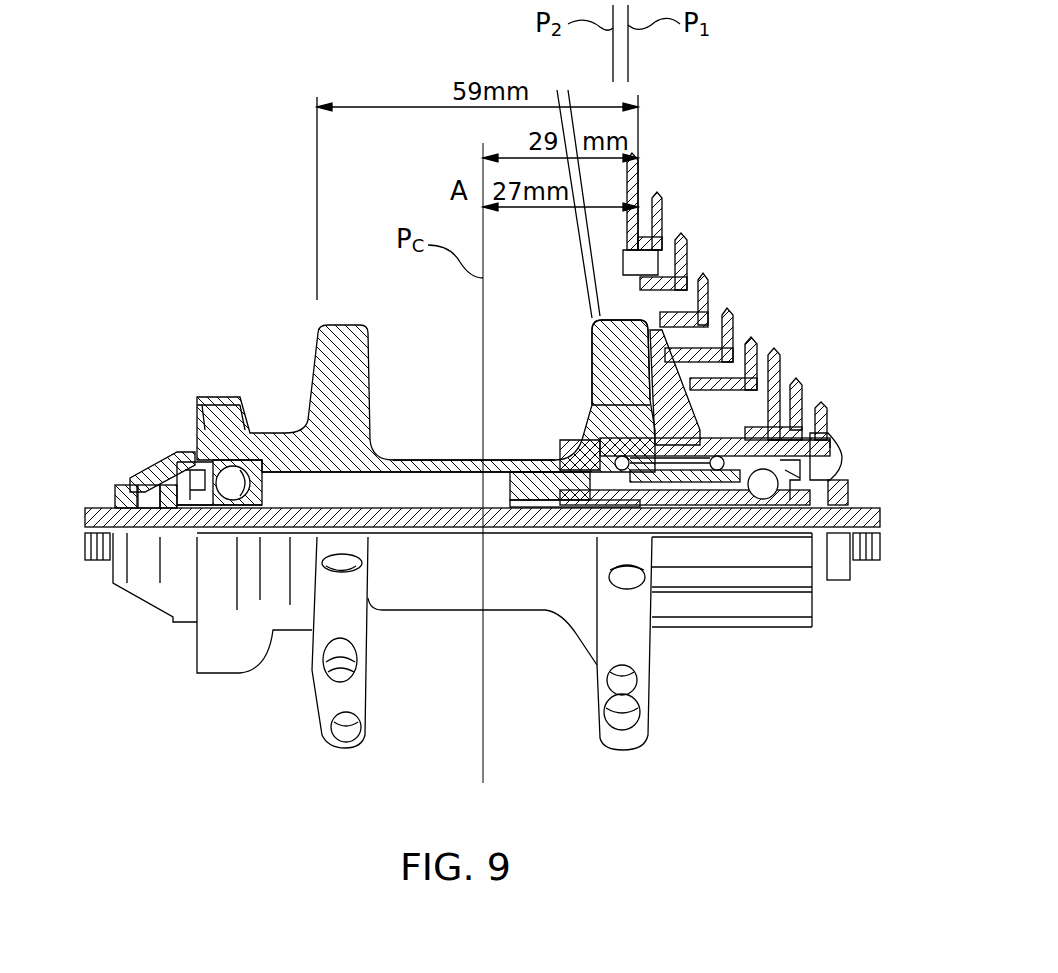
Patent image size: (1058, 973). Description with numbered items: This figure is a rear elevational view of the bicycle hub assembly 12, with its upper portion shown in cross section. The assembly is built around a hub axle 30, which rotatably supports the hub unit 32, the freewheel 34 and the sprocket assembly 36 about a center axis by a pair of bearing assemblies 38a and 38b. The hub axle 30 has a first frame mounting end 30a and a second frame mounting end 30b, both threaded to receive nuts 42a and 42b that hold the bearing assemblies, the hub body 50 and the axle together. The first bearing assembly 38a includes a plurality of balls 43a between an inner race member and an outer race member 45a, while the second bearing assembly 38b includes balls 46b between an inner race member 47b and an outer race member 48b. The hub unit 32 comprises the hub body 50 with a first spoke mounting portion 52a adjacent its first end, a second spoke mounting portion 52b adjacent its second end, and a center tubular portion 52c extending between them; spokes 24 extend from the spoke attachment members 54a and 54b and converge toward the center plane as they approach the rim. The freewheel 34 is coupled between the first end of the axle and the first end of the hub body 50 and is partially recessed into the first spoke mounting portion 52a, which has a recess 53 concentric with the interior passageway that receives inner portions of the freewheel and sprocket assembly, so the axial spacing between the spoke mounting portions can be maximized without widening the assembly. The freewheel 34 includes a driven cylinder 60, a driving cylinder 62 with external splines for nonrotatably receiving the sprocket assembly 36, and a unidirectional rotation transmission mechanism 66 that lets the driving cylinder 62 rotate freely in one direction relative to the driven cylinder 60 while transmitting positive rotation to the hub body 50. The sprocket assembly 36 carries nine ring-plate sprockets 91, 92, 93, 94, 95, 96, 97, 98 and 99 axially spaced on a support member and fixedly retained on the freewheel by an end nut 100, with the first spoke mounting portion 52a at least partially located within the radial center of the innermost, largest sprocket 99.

The bicycle hub assembly 12 is at (735, 170).
The spoke 24 is at (578, 246).
The hub axle 30 is at (868, 508).
The first frame mounting end 30a is at (861, 568).
The second frame mounting end 30b is at (98, 566).
The hub unit 32 is at (492, 422).
The freewheel 34 is at (745, 634).
The sprocket assembly 36 is at (754, 281).
The first bearing assembly 38a is at (740, 495).
The second bearing assembly 38b is at (248, 470).
The nut 42a is at (842, 582).
The nut 42b is at (125, 590).
The balls 43a is at (755, 500).
The outer race member 45a is at (805, 432).
The balls 46b is at (212, 494).
The inner race member 47b is at (203, 500).
The outer race member 48b is at (262, 483).
The hub body 50 is at (432, 611).
The first spoke mounting portion 52a is at (592, 375).
The second spoke mounting portion 52b is at (368, 360).
The center tubular portion 52c is at (443, 462).
The recess 53 is at (572, 447).
The spoke attachment member 54a is at (640, 738).
The spoke attachment member 54b is at (320, 720).
The driven cylinder 60 is at (600, 527).
The driving cylinder 62 is at (598, 406).
The unidirectional rotation transmission mechanism 66 is at (640, 535).
The sprocket 91 is at (828, 410).
The sprocket 92 is at (801, 383).
The sprocket 93 is at (780, 355).
The sprocket 94 is at (755, 343).
The sprocket 95 is at (732, 313).
The sprocket 96 is at (706, 280).
The sprocket 97 is at (684, 237).
The sprocket 98 is at (661, 197).
The innermost or largest sprocket 99 is at (640, 160).
The end nut 100 is at (840, 458).